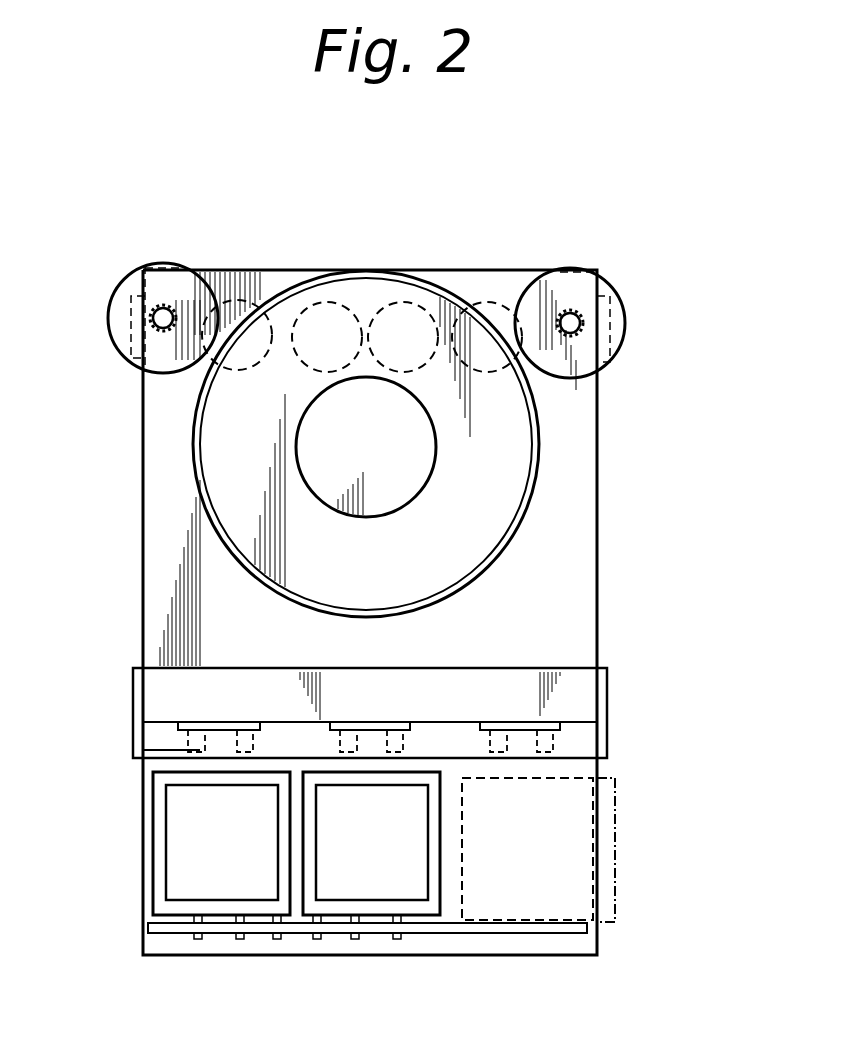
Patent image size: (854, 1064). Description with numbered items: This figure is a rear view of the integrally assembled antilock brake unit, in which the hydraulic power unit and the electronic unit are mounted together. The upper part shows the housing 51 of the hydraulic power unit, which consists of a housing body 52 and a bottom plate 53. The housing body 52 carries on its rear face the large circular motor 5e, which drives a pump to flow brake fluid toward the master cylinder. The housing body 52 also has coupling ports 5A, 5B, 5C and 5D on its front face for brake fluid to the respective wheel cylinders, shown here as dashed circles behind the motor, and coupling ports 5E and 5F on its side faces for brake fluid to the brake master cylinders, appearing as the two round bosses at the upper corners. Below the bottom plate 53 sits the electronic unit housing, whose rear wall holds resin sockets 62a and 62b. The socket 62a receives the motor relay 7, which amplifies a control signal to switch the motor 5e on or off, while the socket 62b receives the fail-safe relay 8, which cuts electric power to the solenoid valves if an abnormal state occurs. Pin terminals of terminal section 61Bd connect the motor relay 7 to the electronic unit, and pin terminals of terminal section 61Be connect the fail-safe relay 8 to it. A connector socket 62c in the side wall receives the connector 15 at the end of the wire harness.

The coupling port 5A is at (490, 302).
The coupling port 5B is at (396, 302).
The coupling port 5C is at (320, 302).
The coupling port 5D is at (226, 292).
The coupling port 5E is at (620, 345).
The coupling port 5F is at (120, 329).
The motor 5e is at (535, 497).
The housing 51 is at (715, 592).
The housing body 52 is at (597, 598).
The bottom plate 53 is at (605, 712).
The motor relay 7 is at (222, 862).
The fail-safe relay 8 is at (377, 862).
The connector 15 is at (615, 895).
The socket 62a is at (155, 875).
The socket 62b is at (440, 905).
The connector socket 62c is at (532, 925).
The terminal section 61Bd is at (150, 940).
The terminal section 61Be is at (300, 940).